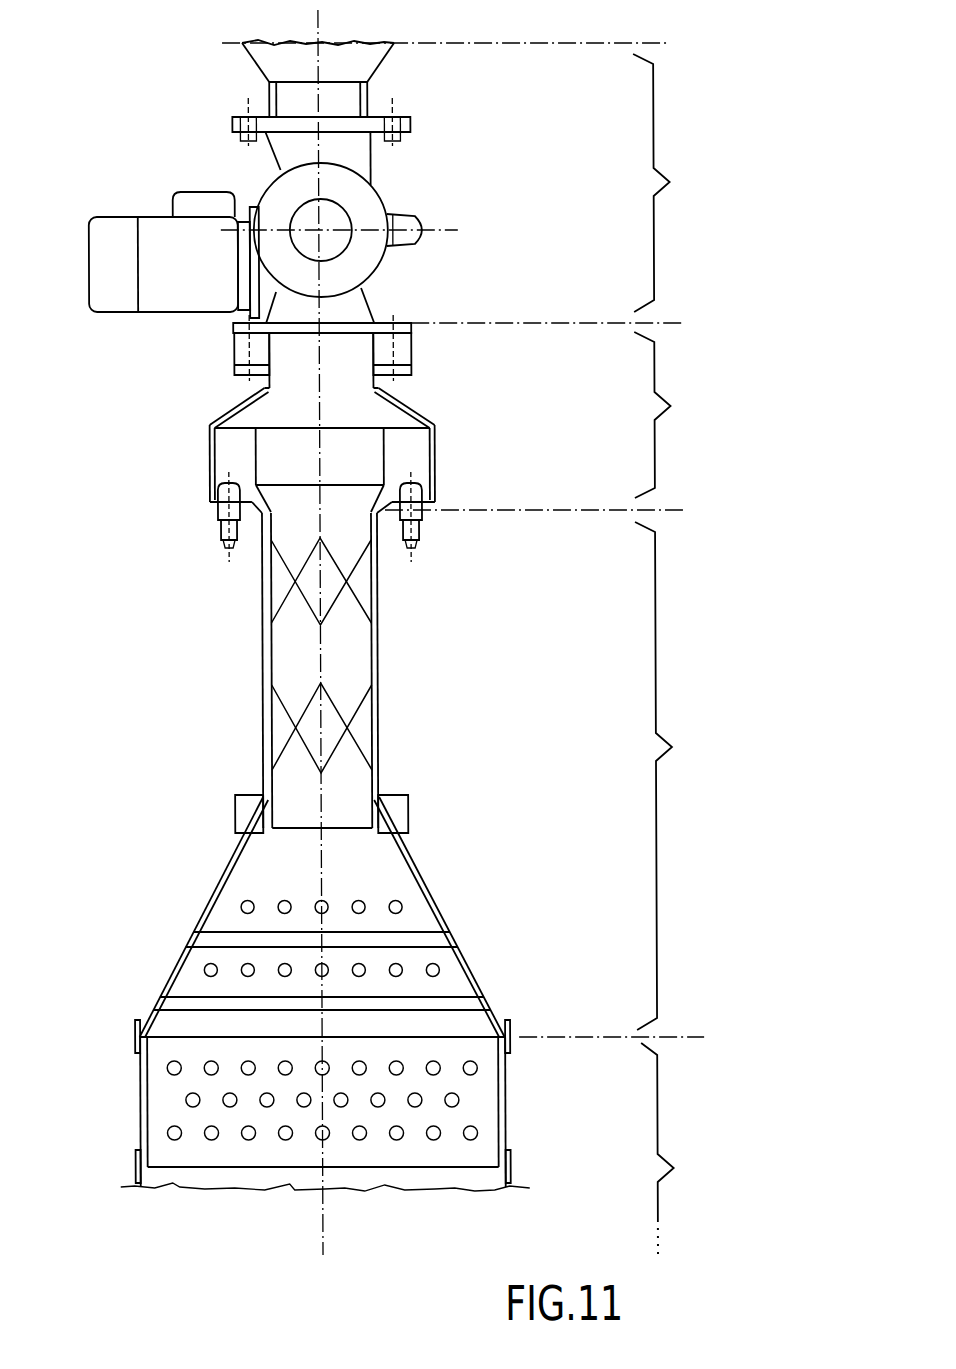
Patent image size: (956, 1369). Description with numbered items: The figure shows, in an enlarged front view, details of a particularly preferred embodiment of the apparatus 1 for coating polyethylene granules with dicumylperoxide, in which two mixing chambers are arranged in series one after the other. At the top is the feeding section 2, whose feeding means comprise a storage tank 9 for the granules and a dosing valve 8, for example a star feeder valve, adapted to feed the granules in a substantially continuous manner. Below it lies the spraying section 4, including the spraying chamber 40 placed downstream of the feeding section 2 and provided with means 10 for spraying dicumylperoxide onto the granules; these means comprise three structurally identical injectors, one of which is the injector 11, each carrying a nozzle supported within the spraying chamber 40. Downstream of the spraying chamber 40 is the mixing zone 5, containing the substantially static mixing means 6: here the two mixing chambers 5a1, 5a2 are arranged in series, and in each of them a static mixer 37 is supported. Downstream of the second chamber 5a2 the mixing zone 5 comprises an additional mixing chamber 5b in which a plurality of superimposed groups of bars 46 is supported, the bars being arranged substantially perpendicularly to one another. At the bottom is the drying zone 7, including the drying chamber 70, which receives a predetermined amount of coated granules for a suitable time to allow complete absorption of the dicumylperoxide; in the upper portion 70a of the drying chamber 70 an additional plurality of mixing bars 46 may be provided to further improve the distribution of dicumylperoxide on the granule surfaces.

The apparatus 1 is at (73, 153).
The feeding section 2 is at (664, 183).
The spraying section 4 is at (665, 415).
The mixing zone 5 is at (673, 776).
The mixing chamber 5a1 is at (384, 599).
The mixing chamber 5a2 is at (384, 721).
The additional mixing chamber 5b is at (446, 886).
The substantially static mixing means 6 is at (408, 675).
The drying zone 7 is at (672, 1148).
The dosing valve 8 is at (387, 200).
The storage tank 9 is at (377, 58).
The means for spraying dicumylperoxide 10 is at (196, 526).
The injector 11 is at (216, 540).
The static mixer 37 is at (279, 583).
The spraying chamber 40 is at (232, 452).
The mixing bars 46 is at (196, 1002).
The drying chamber 70 is at (120, 1138).
The upper portion of the drying chamber 70a is at (512, 1137).